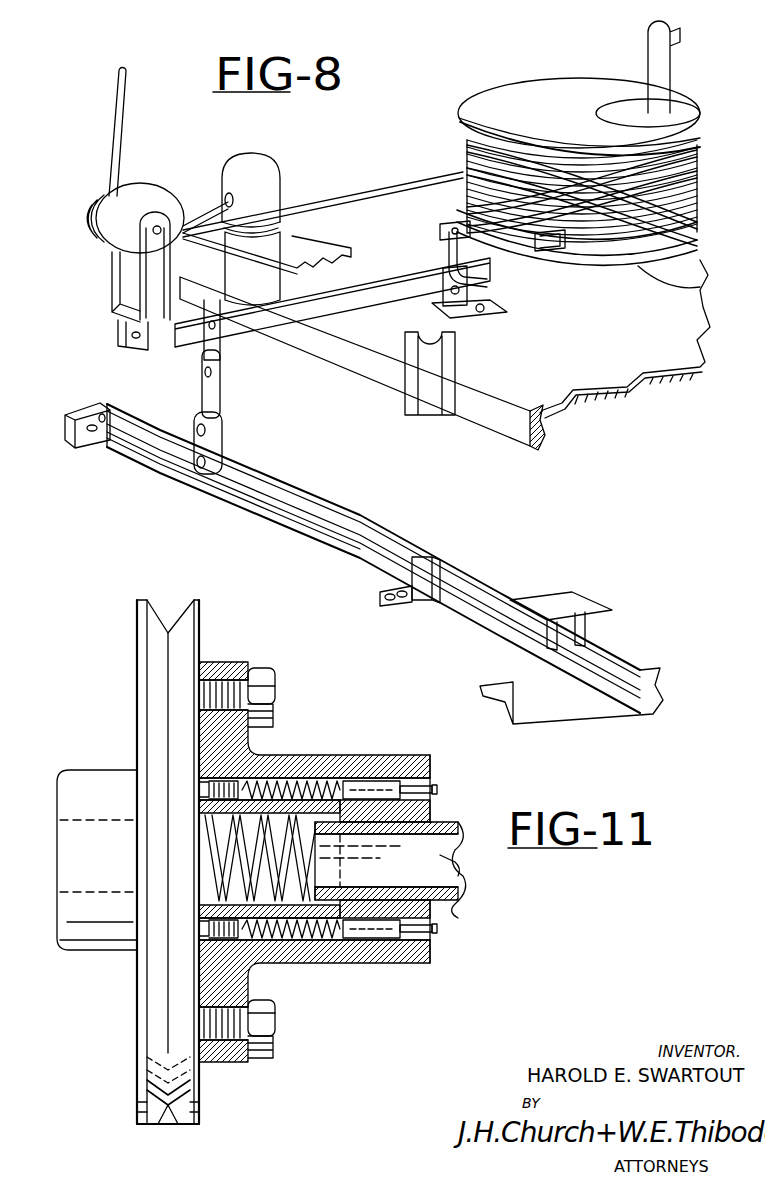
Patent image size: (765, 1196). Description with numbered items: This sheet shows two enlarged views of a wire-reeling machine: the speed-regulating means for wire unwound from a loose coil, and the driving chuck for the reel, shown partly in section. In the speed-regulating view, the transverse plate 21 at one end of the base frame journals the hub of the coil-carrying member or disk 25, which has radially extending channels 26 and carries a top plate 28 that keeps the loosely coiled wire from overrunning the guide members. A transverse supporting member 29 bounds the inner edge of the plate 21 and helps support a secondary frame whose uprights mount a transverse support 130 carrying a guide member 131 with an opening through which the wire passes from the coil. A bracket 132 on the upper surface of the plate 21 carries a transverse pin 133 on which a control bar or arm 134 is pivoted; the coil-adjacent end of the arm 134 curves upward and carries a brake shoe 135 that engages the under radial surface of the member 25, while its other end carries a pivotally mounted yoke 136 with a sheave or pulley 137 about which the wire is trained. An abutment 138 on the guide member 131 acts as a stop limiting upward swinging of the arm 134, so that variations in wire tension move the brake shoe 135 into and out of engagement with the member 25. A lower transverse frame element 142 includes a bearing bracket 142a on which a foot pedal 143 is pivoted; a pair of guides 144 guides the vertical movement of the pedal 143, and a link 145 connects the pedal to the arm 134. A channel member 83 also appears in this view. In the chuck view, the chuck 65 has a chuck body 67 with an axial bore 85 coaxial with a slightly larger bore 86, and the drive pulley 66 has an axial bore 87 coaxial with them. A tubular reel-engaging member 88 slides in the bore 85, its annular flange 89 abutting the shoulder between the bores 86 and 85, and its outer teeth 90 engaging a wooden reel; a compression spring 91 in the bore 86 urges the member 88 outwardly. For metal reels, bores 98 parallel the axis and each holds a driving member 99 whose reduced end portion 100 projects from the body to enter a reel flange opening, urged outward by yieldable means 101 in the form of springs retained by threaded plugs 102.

In FIG. 8, the transverse plate 21 is at (627, 363).
In FIG. 8, the coil-carrying member or disk 25 is at (630, 265).
In FIG. 8, the radially extending channels 26 is at (572, 258).
In FIG. 8, the top plate 28 is at (520, 108).
In FIG. 8, the transverse supporting member 29 is at (523, 441).
In FIG. 8, the channel member 83 is at (440, 370).
In FIG. 8, the transverse support 130 is at (307, 244).
In FIG. 8, the guide member 131 is at (258, 168).
In FIG. 8, the bracket 132 is at (475, 289).
In FIG. 8, the transverse pin 133 is at (455, 282).
In FIG. 8, the control bar or arm 134 is at (342, 300).
In FIG. 8, the brake shoe 135 is at (455, 233).
In FIG. 8, the yoke 136 is at (118, 278).
In FIG. 8, the sheave or pulley 137 is at (155, 197).
In FIG. 8, the abutment 138 is at (252, 300).
In FIG. 8, the lower transverse frame element 142 is at (445, 630).
In FIG. 8, the bearing bracket 142a is at (102, 432).
In FIG. 8, the foot pedal 143 is at (503, 597).
In FIG. 8, the guides 144 is at (442, 582).
In FIG. 8, the link 145 is at (213, 410).
In FIG. 11, the chuck 65 is at (230, 651).
In FIG. 11, the drive pulley 66 is at (153, 1035).
In FIG. 11, the chuck body 67 is at (267, 776).
In FIG. 11, the axial bore 85 is at (410, 903).
In FIG. 11, the bore 86 is at (307, 940).
In FIG. 11, the axial bore 87 is at (80, 820).
In FIG. 11, the reel-engaging member 88 is at (448, 830).
In FIG. 11, the annular flange 89 is at (338, 888).
In FIG. 11, the teeth 90 is at (458, 870).
In FIG. 11, the compression spring 91 is at (213, 853).
In FIG. 11, the bores 98 is at (320, 773).
In FIG. 11, the driving member 99 is at (370, 787).
In FIG. 11, the reduced end portion 100 is at (430, 783).
In FIG. 11, the yieldable means 101 is at (333, 773).
In FIG. 11, the threaded plug 102 is at (196, 781).